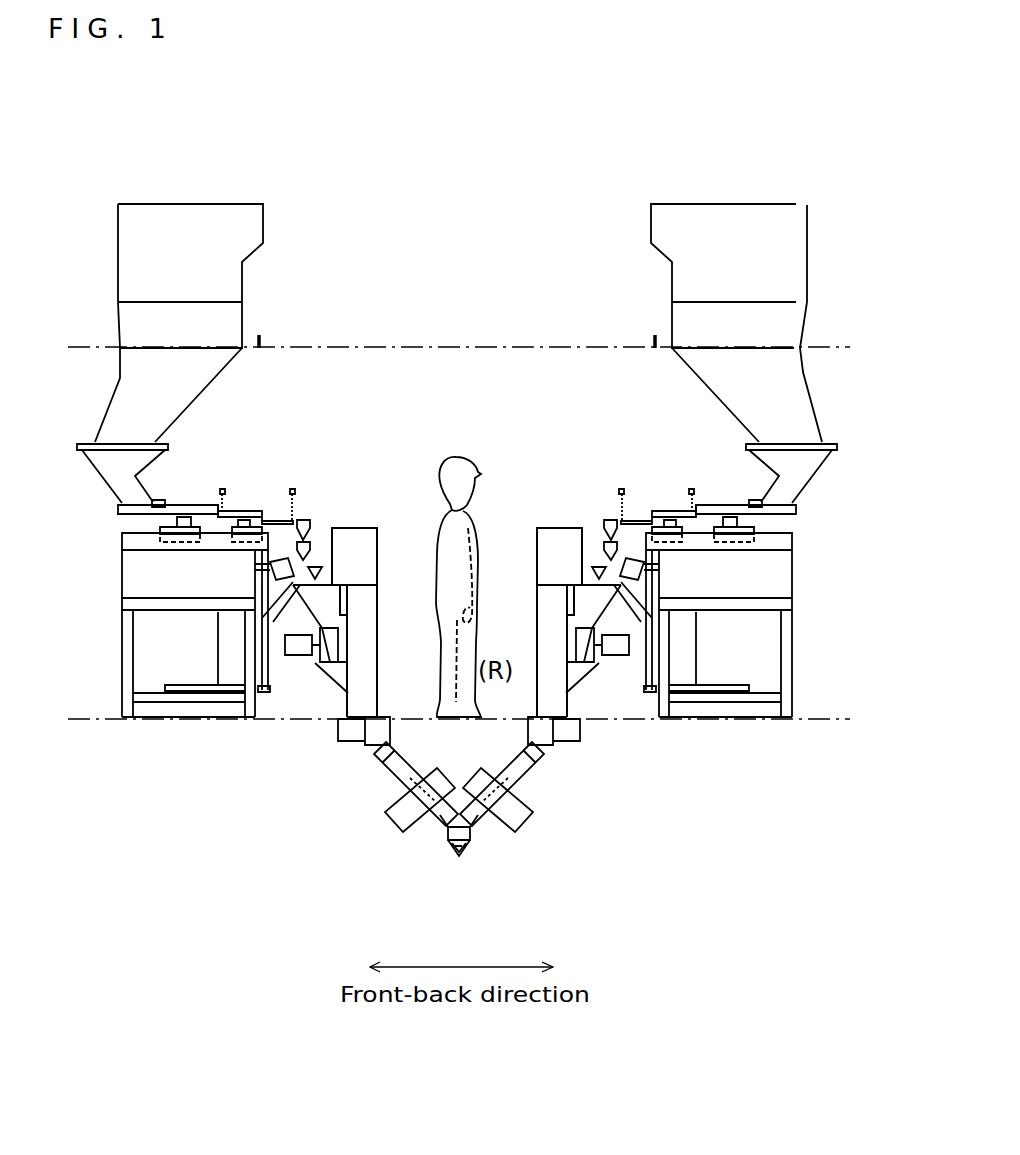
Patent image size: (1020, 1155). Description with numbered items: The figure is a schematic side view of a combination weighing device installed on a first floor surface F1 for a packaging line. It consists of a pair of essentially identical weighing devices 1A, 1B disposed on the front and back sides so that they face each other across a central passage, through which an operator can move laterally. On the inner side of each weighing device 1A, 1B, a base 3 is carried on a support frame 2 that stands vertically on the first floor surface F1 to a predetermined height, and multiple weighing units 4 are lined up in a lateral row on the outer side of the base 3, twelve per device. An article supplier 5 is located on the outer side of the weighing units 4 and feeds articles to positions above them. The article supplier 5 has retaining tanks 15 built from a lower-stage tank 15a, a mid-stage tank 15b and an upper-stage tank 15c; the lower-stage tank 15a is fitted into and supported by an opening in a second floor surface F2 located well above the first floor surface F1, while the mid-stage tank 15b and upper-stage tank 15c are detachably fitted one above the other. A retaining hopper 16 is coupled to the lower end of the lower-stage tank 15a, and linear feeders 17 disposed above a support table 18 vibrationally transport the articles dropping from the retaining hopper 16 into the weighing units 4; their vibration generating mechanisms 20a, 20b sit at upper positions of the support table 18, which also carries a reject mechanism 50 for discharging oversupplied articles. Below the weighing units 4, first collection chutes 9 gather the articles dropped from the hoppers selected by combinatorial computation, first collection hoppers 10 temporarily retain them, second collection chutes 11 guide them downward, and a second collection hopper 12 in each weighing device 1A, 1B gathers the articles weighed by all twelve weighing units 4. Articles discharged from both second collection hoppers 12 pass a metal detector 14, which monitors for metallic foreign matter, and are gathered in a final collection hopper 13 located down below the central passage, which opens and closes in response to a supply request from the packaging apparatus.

The weighing device 1A is at (548, 492).
The weighing device 1B is at (329, 492).
The support frame 2 is at (378, 648).
The base 3 is at (378, 541).
The weighing unit 4 is at (324, 530).
The article supplier 5 is at (238, 446).
The first collection chute 9 is at (310, 617).
The first collection hopper 10 is at (320, 648).
The second collection chute 11 is at (338, 683).
The second collection hopper 12 is at (384, 741).
The final collection hopper 13 is at (470, 834).
The metal detector 14 is at (396, 832).
The retaining tank 15 is at (457, 327).
The lower-stage tank 15a is at (112, 404).
The mid-stage tank 15b is at (243, 321).
The upper-stage tank 15c is at (243, 277).
The retaining hopper 16 is at (100, 477).
The linear feeder 17 is at (244, 505).
The support table 18 is at (122, 592).
The vibration generating mechanism 20a is at (162, 521).
The vibration generating mechanism 20b is at (240, 545).
The reject mechanism 50 is at (258, 584).
The first floor surface F1 is at (74, 716).
The second floor surface F2 is at (69, 347).